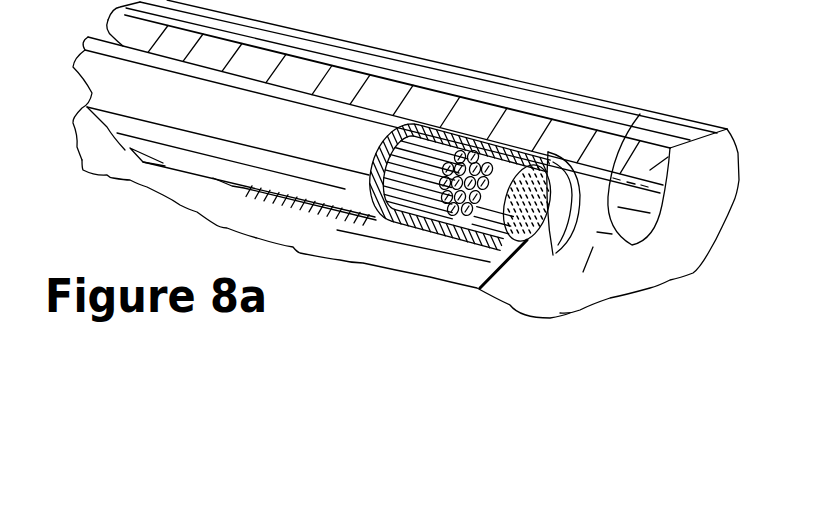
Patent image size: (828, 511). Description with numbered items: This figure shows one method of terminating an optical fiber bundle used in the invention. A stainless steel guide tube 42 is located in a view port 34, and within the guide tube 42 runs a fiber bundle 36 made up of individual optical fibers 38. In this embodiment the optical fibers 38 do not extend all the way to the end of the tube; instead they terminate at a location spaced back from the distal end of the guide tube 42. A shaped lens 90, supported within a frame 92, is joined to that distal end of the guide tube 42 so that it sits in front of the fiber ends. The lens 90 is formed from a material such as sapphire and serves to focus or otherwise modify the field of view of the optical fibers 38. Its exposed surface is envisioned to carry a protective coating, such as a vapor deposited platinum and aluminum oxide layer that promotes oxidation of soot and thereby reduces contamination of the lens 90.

The view port 34 is at (640, 114).
The fiber bundle 36 is at (437, 140).
The optical fibers 38 is at (407, 205).
The stainless steel guide tube 42 is at (220, 120).
The shaped lens 90 is at (536, 262).
The frame 92 is at (507, 157).